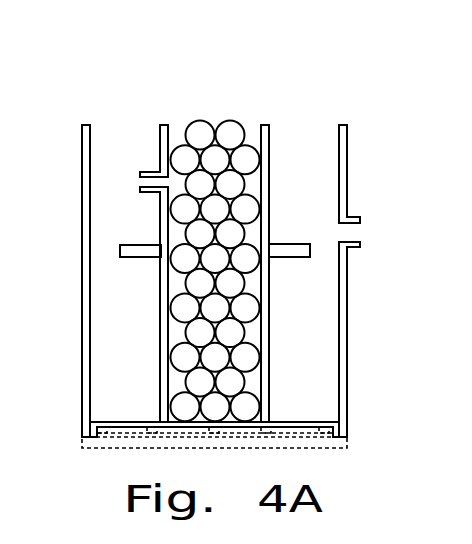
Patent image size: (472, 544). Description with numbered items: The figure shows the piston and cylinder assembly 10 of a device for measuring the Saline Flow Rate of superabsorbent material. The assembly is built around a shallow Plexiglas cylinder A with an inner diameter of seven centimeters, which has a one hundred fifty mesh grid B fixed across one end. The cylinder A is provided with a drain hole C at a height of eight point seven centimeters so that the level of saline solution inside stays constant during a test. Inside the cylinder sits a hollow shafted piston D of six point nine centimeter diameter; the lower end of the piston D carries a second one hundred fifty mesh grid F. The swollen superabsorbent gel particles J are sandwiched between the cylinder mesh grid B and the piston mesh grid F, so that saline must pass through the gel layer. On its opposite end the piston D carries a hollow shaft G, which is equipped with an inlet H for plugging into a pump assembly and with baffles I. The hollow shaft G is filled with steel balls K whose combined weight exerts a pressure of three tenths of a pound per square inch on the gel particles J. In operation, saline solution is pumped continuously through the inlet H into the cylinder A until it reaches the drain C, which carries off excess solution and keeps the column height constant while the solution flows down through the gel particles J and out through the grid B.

The piston and cylinder assembly 10 is at (157, 93).
The cylinder A is at (347, 315).
The 150 Mesh grid B is at (345, 447).
The drain hole C is at (367, 236).
The hollow shafted piston D is at (214, 417).
The 150 Mesh grid F is at (335, 437).
The hollow shaft G is at (225, 273).
The inlet H is at (140, 185).
The baffles I is at (139, 263).
The swollen superabsorbent gel particles J is at (82, 435).
The steel balls K is at (220, 252).